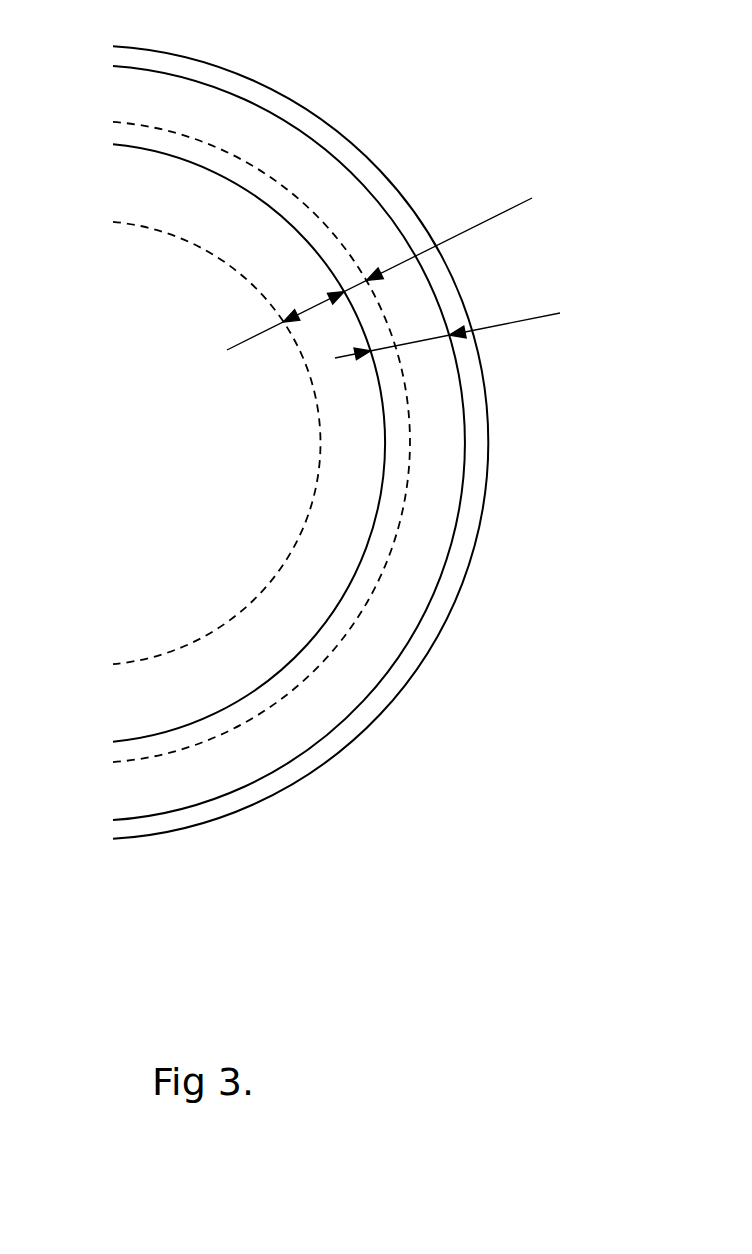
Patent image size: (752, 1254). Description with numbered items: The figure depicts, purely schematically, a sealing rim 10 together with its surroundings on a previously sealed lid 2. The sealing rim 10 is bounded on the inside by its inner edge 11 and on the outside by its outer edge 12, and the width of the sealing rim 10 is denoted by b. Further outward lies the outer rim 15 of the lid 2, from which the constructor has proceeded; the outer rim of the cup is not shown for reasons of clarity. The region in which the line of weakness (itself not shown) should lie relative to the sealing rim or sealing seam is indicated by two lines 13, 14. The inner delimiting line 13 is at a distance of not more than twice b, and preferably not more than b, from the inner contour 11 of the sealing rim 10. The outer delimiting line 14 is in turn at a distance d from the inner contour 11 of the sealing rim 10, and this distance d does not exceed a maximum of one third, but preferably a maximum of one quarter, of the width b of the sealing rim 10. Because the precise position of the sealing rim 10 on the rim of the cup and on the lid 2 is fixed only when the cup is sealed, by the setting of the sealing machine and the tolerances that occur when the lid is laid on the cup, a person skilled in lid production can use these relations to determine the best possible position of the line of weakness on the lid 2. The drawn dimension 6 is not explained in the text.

The lid 2 is at (178, 450).
The wall thickness 6 is at (447, 334).
The sealing rim 10 is at (432, 557).
The inner edge 11 is at (368, 543).
The outer edge 12 is at (441, 573).
The inner delimiting line 13 is at (188, 242).
The outer delimiting line 14 is at (215, 148).
The outer rim 15 is at (488, 420).
The width of the sealing rim b is at (379, 274).
The distance d is at (348, 277).